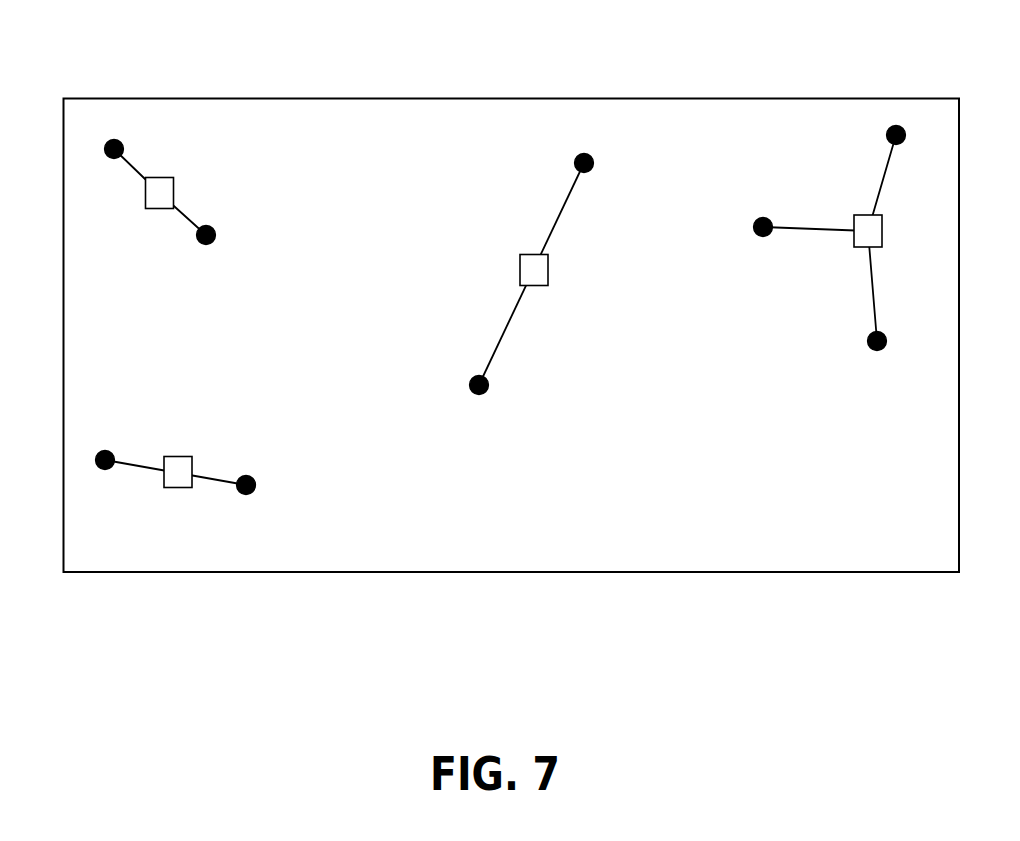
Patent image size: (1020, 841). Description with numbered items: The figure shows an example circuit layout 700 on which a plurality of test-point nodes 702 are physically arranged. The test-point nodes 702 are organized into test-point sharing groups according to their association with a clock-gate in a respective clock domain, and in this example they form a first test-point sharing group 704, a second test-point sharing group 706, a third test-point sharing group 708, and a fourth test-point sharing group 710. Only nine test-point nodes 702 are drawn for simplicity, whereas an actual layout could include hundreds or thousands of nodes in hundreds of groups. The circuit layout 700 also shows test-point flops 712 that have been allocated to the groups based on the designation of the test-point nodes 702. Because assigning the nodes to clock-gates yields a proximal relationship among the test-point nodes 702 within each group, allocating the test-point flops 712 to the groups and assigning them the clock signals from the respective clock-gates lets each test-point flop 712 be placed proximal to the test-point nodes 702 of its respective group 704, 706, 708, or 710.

The circuit layout 700 is at (124, 47).
The test-point node 702 is at (119, 141).
The first test-point sharing group 704 is at (245, 212).
The second test-point sharing group 706 is at (216, 415).
The third test-point sharing group 708 is at (588, 296).
The fourth test-point sharing group 710 is at (798, 312).
The test-point flop 712 is at (166, 177).